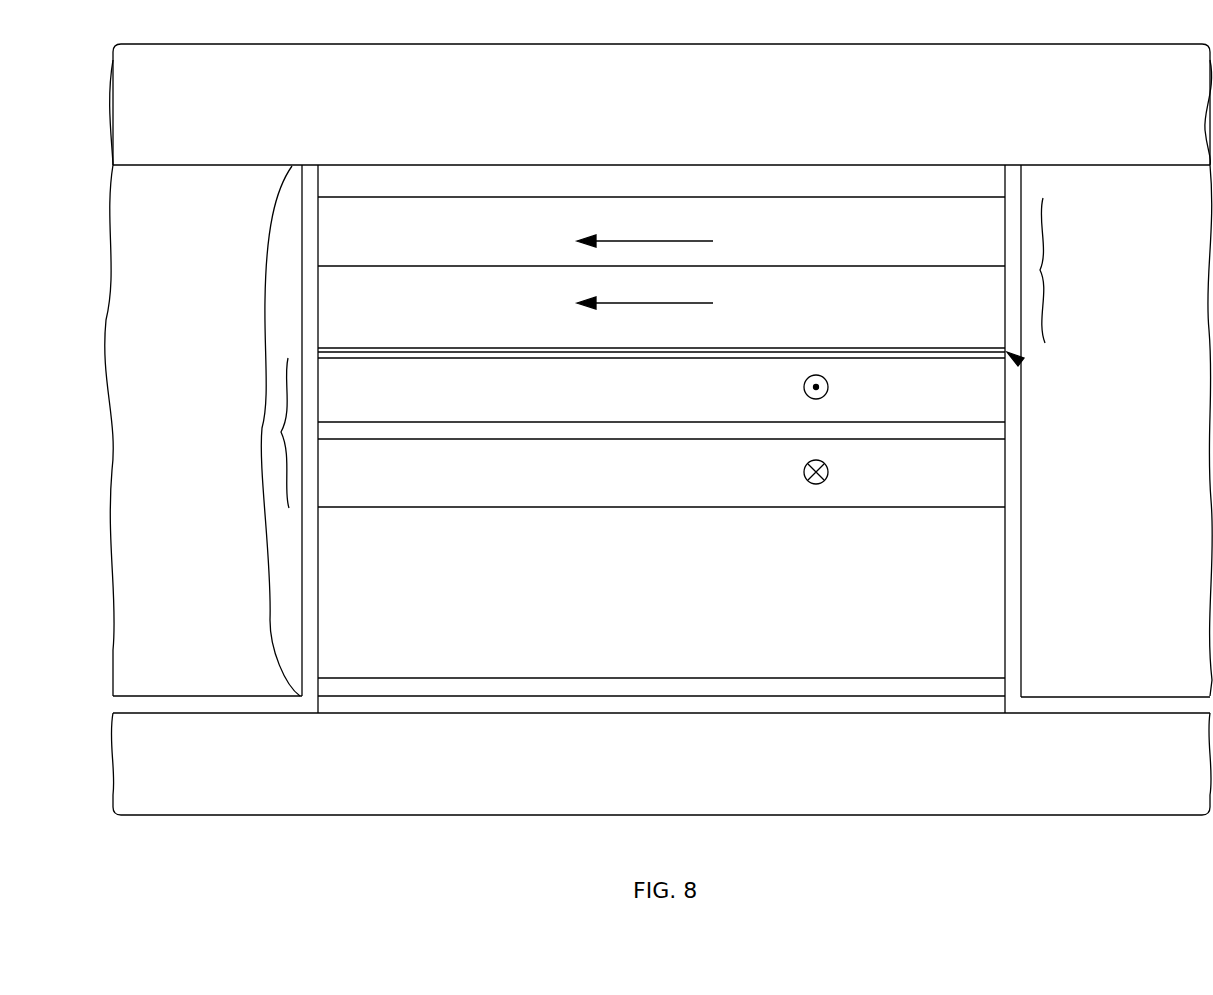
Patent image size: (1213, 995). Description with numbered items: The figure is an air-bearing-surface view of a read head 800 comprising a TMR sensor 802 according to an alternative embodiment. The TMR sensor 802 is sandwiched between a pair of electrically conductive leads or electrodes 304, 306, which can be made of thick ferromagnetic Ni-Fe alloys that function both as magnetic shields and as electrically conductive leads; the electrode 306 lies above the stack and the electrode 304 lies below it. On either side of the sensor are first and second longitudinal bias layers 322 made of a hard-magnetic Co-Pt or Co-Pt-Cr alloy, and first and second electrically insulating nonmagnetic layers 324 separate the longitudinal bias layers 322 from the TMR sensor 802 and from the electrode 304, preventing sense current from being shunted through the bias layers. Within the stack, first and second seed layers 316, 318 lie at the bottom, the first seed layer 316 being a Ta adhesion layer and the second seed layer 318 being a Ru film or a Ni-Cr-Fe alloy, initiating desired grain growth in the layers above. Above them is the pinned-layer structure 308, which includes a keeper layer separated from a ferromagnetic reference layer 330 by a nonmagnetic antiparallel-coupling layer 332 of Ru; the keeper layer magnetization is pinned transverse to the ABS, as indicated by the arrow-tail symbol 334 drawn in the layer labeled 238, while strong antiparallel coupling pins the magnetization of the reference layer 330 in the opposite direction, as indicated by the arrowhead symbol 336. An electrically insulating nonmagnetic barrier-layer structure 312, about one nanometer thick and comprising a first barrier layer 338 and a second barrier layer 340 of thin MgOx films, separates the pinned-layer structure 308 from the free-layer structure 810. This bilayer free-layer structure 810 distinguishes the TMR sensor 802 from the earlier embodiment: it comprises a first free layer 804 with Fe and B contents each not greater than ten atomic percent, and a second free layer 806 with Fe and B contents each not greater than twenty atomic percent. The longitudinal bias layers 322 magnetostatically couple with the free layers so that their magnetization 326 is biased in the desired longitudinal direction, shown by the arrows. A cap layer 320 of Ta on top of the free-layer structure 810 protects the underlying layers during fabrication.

The read head 800 is at (833, 34).
The electrode 306 is at (676, 112).
The electrode 304 is at (698, 755).
The longitudinal bias layer 322 is at (200, 320).
The electrically insulating nonmagnetic layer 324 is at (190, 708).
The TMR sensor 802 is at (272, 204).
The free-layer structure 810 is at (1047, 218).
The pinned-layer structure 308 is at (285, 372).
The cap layer 320 is at (657, 181).
The second free layer 806 is at (798, 234).
The first free layer 804 is at (792, 304).
The magnetization 326 is at (664, 240).
The second barrier layer 340 is at (895, 350).
The first barrier layer 338 is at (893, 358).
The barrier-layer structure 312 is at (1020, 360).
The reference layer 330 is at (748, 388).
The arrowhead symbol 336 is at (829, 387).
The antiparallel-coupling layer 332 is at (422, 428).
The reference layer 238 is at (745, 475).
The arrow-tail symbol 334 is at (829, 473).
The second seed layer 318 is at (774, 700).
The first seed layer 316 is at (862, 710).